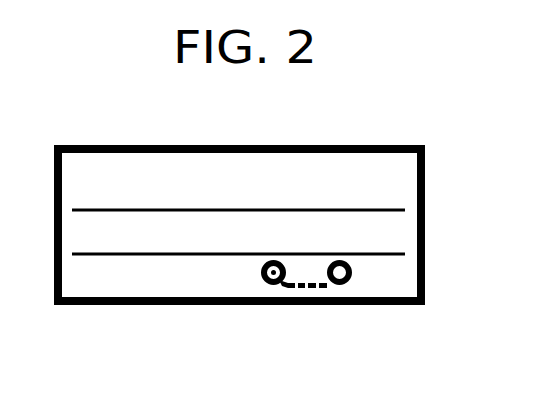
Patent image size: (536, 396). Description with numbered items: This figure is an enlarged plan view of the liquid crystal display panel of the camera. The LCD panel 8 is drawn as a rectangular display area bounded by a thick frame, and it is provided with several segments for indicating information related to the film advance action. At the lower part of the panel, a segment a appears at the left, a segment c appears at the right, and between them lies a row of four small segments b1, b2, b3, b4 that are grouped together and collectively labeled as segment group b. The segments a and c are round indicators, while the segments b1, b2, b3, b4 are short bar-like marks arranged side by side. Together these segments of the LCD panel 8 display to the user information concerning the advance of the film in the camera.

The LCD panel 8 is at (390, 137).
The segment a is at (272, 288).
The segment group b is at (328, 337).
The segment b1 is at (291, 289).
The segment b2 is at (301, 289).
The segment b3 is at (313, 289).
The segment b4 is at (324, 289).
The segment c is at (352, 282).